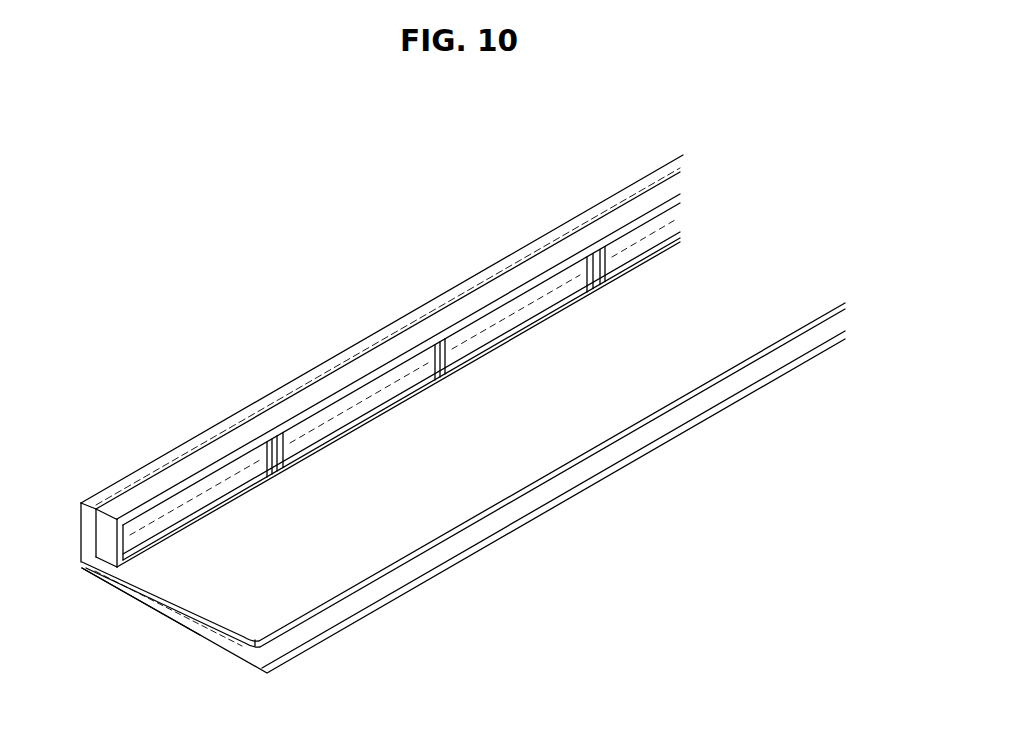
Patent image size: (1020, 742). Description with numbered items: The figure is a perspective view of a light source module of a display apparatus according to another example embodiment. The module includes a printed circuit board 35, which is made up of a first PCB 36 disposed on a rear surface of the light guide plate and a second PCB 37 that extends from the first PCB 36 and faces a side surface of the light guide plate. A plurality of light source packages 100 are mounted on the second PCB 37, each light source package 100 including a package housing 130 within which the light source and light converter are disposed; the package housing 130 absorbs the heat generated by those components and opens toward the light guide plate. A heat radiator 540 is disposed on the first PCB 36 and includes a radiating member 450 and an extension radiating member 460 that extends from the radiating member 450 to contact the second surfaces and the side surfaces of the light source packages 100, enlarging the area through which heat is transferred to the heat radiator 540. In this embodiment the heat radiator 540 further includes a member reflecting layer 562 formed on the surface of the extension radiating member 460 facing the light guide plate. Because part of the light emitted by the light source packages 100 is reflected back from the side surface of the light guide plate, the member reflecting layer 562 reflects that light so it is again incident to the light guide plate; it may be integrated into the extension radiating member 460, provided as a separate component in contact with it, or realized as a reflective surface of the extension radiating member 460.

The light source package 100 is at (212, 470).
The package housing 130 is at (420, 366).
The extension radiating member 460 is at (310, 403).
The member reflecting layer 562 is at (292, 443).
The radiating member 450 is at (312, 597).
The heat radiator 540 is at (229, 646).
The second PCB 37 is at (81, 535).
The first PCB 36 is at (156, 608).
The printed circuit board 35 is at (147, 595).